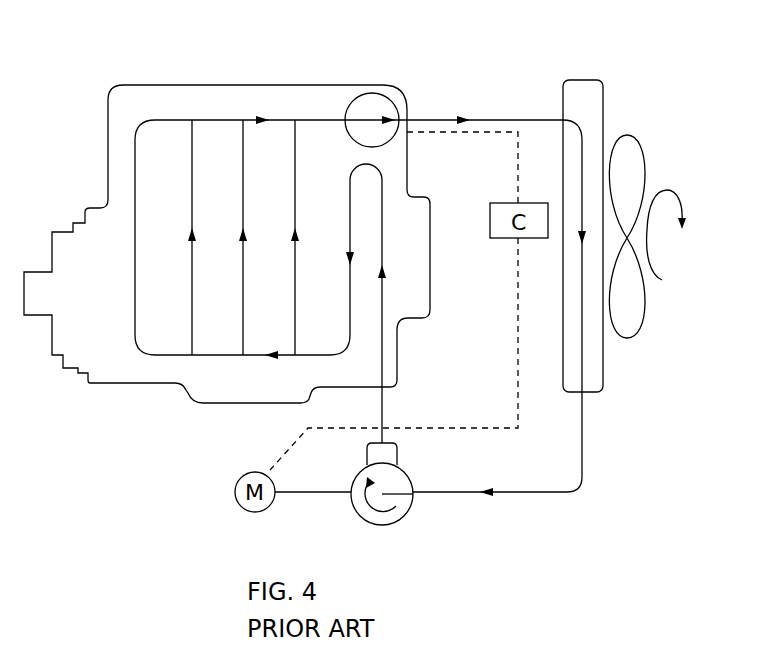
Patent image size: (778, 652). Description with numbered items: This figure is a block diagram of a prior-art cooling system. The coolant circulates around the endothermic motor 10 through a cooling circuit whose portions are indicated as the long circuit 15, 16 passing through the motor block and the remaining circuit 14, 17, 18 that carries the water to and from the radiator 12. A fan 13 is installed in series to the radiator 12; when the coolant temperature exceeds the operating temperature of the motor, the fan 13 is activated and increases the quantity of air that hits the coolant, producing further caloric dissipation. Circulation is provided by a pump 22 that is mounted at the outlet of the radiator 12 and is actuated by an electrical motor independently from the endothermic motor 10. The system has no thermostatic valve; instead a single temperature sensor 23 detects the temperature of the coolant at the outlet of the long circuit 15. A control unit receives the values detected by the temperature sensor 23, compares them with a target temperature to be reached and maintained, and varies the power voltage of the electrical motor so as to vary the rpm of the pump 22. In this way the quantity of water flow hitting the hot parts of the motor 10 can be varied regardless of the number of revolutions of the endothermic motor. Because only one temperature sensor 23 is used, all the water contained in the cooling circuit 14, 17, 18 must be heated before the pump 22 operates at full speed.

The motor 10 is at (190, 152).
The radiator 12 is at (585, 97).
The fan 13 is at (627, 195).
The cooling circuit 14 is at (226, 108).
The long circuit 15 is at (287, 116).
The long circuit 16 is at (583, 348).
The cooling circuit 17 is at (437, 118).
The cooling circuit 18 is at (545, 495).
The pump 22 is at (357, 513).
The temperature sensor 23 is at (380, 105).